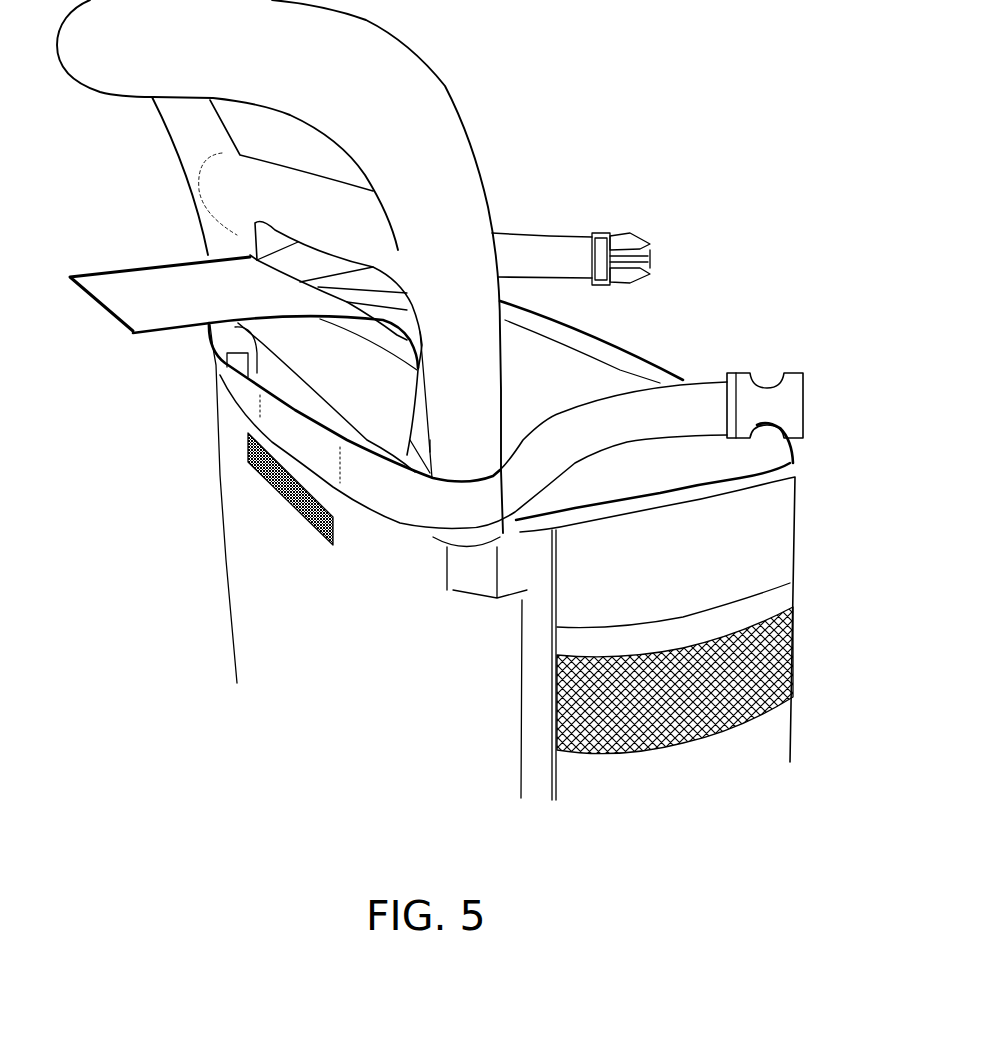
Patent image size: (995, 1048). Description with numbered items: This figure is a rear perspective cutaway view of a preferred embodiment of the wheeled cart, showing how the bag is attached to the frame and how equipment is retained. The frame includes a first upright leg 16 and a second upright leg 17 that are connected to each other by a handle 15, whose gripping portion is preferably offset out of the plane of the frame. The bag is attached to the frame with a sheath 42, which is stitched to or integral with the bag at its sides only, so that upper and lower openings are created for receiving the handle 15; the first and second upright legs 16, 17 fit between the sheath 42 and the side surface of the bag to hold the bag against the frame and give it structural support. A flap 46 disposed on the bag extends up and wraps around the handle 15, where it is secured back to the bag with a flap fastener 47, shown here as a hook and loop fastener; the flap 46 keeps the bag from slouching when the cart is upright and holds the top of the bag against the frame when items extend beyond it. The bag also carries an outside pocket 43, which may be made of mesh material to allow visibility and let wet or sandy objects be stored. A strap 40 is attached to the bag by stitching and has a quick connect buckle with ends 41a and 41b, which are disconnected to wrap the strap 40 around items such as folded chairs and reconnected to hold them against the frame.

The handle 15 is at (440, 82).
The first upright leg 16 is at (242, 364).
The second upright leg 17 is at (477, 577).
The strap 40 is at (393, 507).
The buckle end 41a is at (643, 233).
The buckle end 41b is at (807, 387).
The sheath 42 is at (385, 671).
The pocket 43 is at (797, 650).
The flap 46 is at (118, 303).
The flap fastener 47 is at (300, 507).